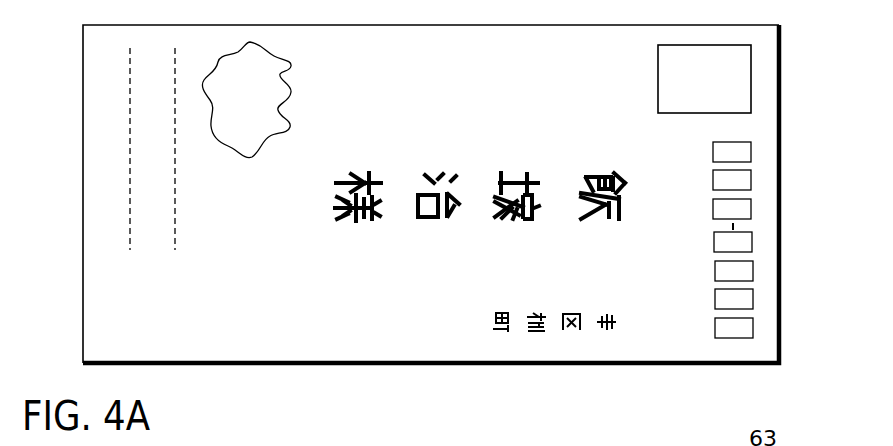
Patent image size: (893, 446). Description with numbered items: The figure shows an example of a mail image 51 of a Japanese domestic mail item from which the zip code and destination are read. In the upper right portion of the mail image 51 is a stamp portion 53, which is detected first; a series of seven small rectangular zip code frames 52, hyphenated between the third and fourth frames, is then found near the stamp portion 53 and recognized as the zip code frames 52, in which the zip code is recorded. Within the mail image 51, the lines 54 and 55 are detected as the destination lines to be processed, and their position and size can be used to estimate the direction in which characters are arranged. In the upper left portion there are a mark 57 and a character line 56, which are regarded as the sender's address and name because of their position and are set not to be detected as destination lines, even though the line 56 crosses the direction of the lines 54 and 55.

The mail image 51 is at (690, 355).
The zip code frames 52 is at (763, 216).
The stamp portion 53 is at (751, 86).
The line 54 is at (547, 352).
The line 55 is at (495, 158).
The character line 56 is at (136, 36).
The postmark 57 is at (289, 70).